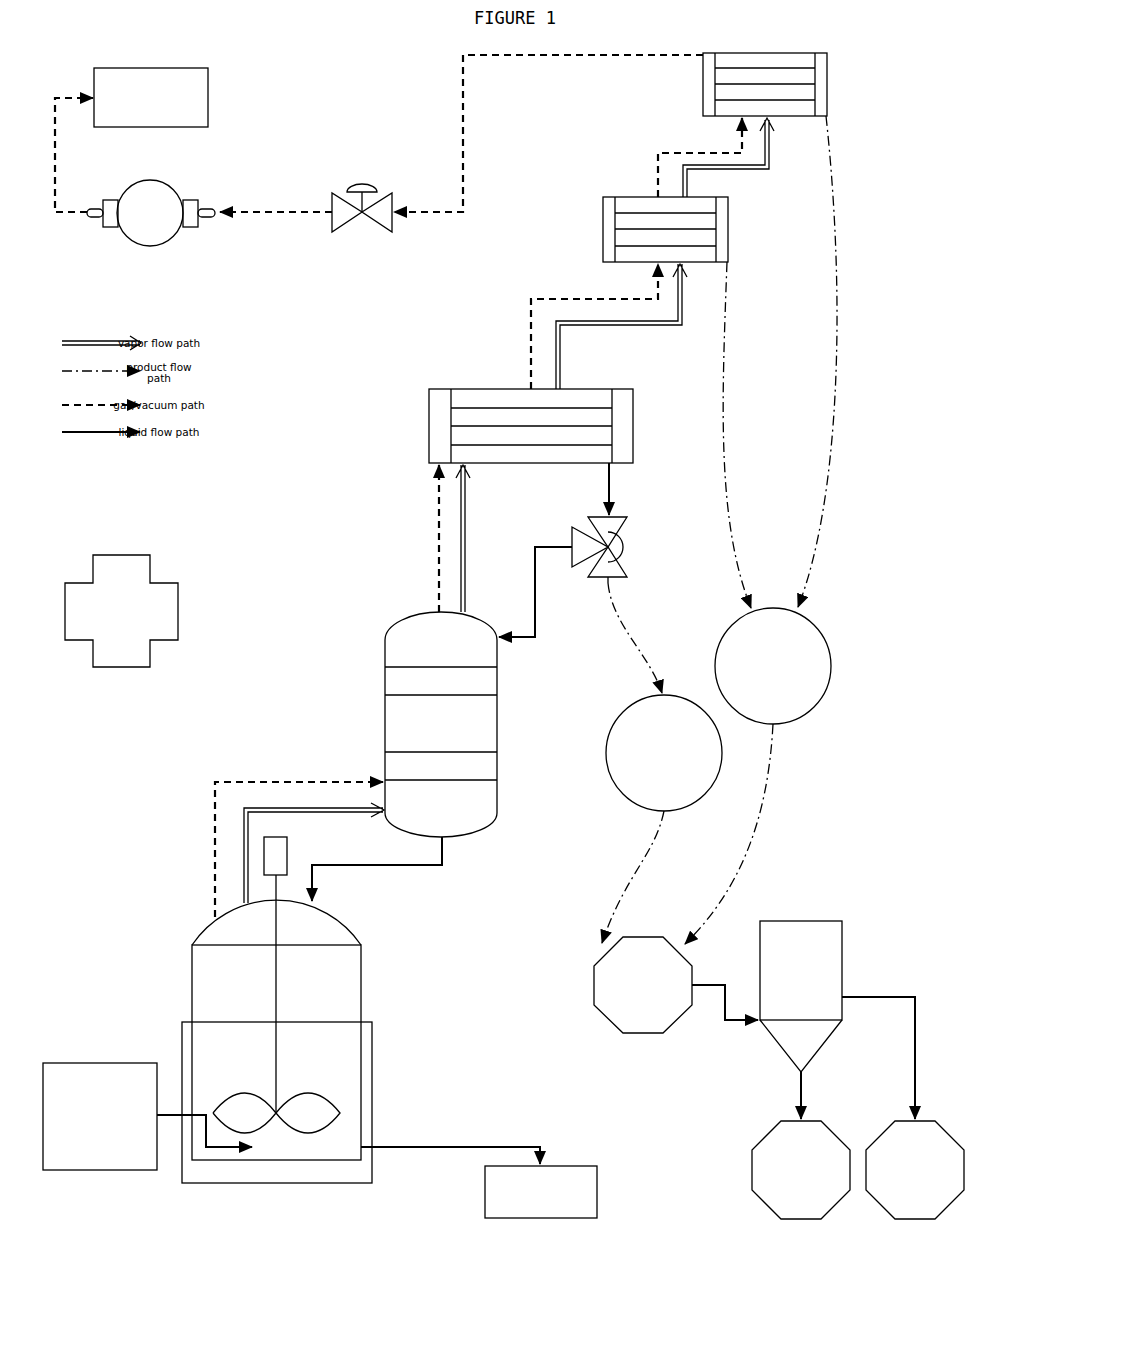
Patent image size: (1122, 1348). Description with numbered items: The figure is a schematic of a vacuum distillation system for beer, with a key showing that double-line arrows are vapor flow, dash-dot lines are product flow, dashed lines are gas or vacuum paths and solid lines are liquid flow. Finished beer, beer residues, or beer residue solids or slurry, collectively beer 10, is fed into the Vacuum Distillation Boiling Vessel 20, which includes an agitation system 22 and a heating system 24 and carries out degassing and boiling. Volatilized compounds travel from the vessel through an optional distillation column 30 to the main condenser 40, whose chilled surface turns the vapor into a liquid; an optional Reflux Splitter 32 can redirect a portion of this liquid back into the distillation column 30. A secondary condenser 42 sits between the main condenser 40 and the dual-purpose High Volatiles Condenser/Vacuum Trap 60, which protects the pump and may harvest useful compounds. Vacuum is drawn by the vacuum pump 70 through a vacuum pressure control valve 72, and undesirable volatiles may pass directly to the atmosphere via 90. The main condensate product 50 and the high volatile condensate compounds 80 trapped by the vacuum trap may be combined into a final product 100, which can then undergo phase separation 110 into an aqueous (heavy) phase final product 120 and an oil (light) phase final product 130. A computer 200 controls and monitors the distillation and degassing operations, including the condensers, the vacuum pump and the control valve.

The beer 10 is at (137, 1063).
The Vacuum Distillation Boiling Vessel 20 is at (361, 998).
The agitation system 22 is at (315, 1112).
The heating system 24 is at (345, 1170).
The distillation column 30 is at (385, 666).
The Reflux Splitter 32 is at (625, 517).
The main condenser 40 is at (429, 425).
The secondary condenser 42 is at (603, 230).
The main condensate product 50 is at (618, 790).
The High Volatiles Condenser/Vacuum Trap 60 is at (830, 84).
The vacuum pump 70 is at (178, 190).
The vacuum pressure control valve 72 is at (365, 186).
The high volatile condensate compounds 80 is at (831, 665).
The atmosphere exhaust / waste 90 is at (208, 100).
The final product 100 is at (605, 1020).
The phase separation 110 is at (845, 952).
The aqueous (heavy) phase final product 120 is at (760, 1135).
The oil (light) phase final product 130 is at (882, 1135).
The computer 200 is at (121, 650).